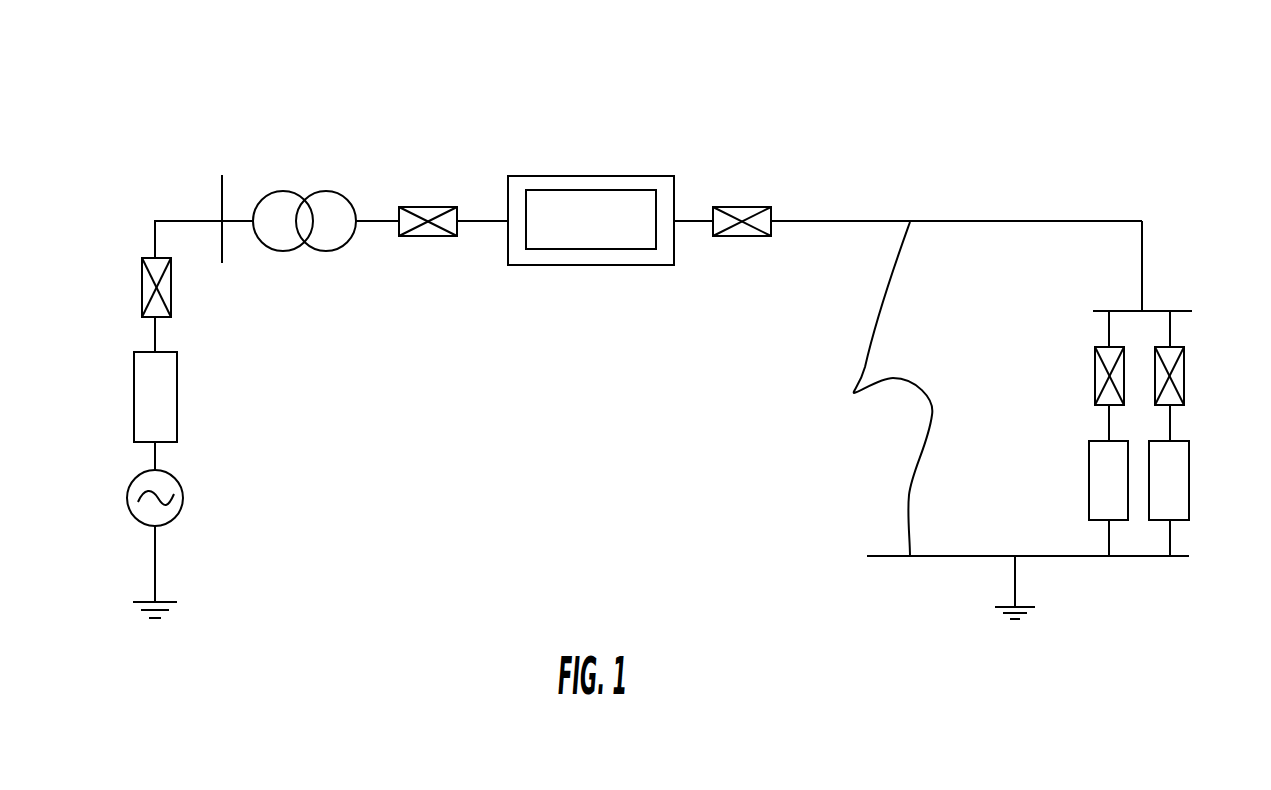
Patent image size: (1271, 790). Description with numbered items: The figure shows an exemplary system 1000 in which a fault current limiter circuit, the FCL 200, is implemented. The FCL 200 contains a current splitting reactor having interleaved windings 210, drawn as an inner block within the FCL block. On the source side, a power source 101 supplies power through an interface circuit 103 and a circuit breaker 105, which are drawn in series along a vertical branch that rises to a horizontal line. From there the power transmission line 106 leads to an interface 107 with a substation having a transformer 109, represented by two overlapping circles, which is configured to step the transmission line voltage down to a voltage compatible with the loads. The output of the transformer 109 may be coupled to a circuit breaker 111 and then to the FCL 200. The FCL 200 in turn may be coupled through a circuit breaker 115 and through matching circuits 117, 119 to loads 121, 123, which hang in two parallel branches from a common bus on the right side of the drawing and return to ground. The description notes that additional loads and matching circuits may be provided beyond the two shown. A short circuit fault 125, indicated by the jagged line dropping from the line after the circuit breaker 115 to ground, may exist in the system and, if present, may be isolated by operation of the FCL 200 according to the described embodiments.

The system 1000 is at (973, 79).
The power source 101 is at (128, 498).
The interface circuit 103 is at (134, 412).
The circuit breaker 105 is at (141, 290).
The power transmission line 106 is at (175, 221).
The interface 107 is at (224, 185).
The transformer 109 is at (342, 192).
The circuit breaker 111 is at (425, 207).
The circuit breaker 115 is at (742, 207).
The matching circuit 117 is at (1094, 388).
The matching circuit 119 is at (1185, 388).
The load 121 is at (1088, 480).
The load 123 is at (1190, 480).
The short circuit fault 125 is at (866, 343).
The FCL circuit 200 is at (591, 185).
The current splitting reactor having interleaved windings 210 is at (609, 232).